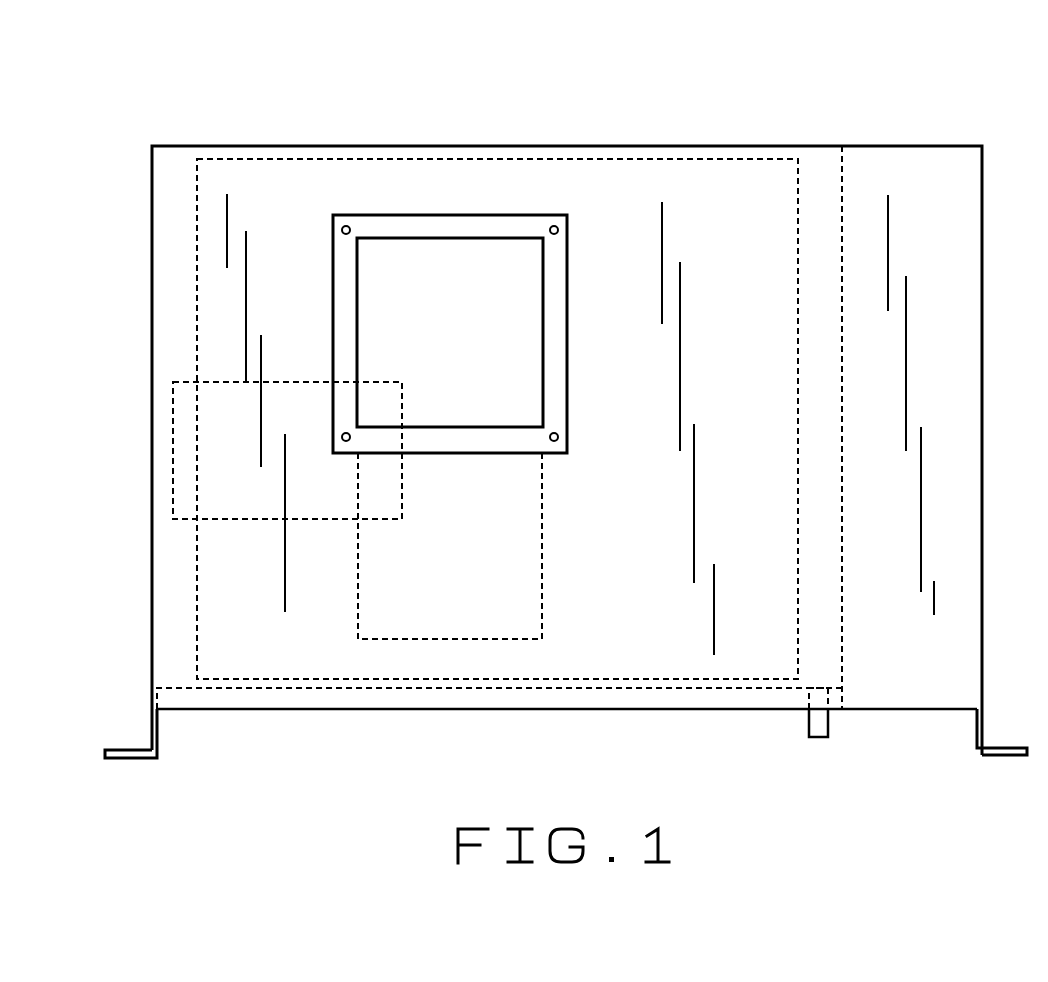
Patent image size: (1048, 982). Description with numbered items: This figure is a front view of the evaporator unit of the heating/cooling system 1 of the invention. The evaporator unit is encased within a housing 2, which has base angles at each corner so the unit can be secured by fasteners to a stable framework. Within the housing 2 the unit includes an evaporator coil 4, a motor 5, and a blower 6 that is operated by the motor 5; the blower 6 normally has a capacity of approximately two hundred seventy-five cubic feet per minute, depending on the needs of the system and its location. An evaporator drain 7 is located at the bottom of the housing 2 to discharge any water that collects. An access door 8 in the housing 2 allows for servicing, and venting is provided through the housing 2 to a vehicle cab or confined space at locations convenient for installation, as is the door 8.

The heating/cooling system 1 is at (372, 126).
The housing 2 is at (962, 146).
The evaporator coil 4 is at (725, 388).
The motor 5 is at (223, 397).
The blower 6 is at (520, 588).
The evaporator drain 7 is at (818, 727).
The access door 8 is at (552, 251).